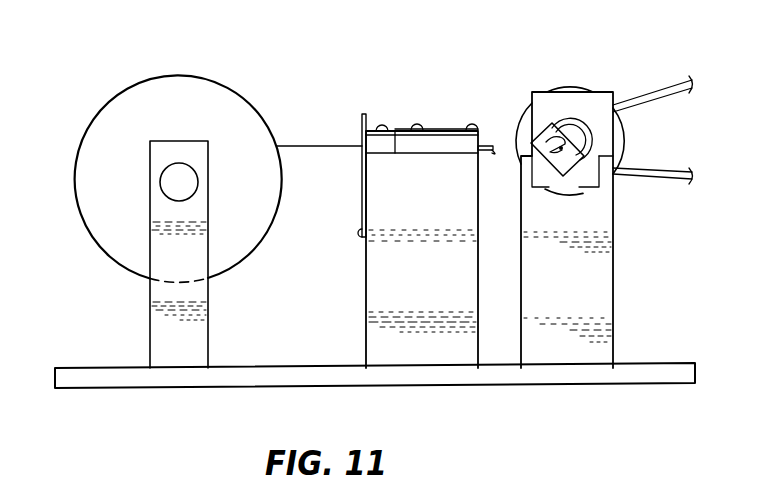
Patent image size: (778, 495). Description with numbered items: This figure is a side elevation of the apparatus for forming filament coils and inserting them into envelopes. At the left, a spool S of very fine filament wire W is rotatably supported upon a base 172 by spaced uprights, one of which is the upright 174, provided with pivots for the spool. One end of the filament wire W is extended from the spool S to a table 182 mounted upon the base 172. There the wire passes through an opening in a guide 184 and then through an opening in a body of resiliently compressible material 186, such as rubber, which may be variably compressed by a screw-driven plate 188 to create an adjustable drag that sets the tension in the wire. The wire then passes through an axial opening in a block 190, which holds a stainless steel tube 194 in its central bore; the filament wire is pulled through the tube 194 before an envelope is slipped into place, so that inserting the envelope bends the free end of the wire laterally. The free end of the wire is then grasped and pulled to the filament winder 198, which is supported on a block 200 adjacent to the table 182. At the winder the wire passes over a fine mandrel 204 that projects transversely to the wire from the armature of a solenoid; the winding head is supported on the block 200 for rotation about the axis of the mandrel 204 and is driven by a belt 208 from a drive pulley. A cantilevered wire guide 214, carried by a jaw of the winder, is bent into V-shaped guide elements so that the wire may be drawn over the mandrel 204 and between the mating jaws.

The spool S is at (114, 229).
The filament wire W is at (322, 146).
The base 172 is at (137, 379).
The upright 174 is at (197, 327).
The table 182 is at (392, 275).
The guide 184 is at (362, 194).
The body of resiliently compressible material 186 is at (378, 150).
The screw-driven plate 188 is at (372, 124).
The block 190 is at (436, 150).
The stainless steel tube 194 is at (489, 144).
The filament winder 198 is at (549, 78).
The block 200 is at (600, 280).
The mandrel 204 is at (549, 187).
The belt 208 is at (669, 82).
The wire guide 214 is at (559, 136).